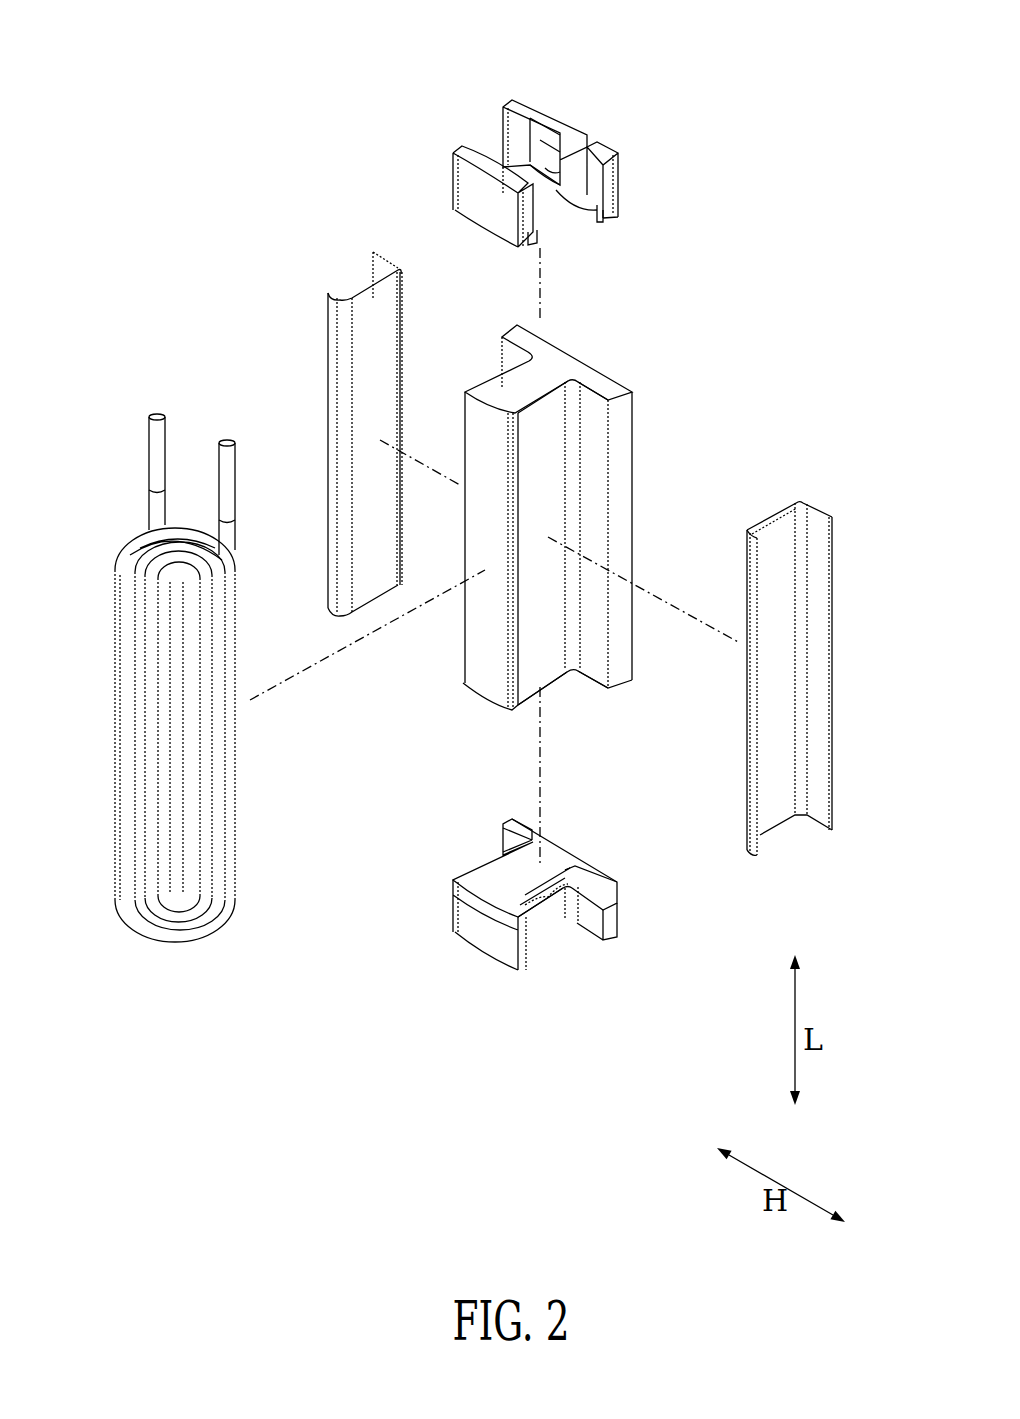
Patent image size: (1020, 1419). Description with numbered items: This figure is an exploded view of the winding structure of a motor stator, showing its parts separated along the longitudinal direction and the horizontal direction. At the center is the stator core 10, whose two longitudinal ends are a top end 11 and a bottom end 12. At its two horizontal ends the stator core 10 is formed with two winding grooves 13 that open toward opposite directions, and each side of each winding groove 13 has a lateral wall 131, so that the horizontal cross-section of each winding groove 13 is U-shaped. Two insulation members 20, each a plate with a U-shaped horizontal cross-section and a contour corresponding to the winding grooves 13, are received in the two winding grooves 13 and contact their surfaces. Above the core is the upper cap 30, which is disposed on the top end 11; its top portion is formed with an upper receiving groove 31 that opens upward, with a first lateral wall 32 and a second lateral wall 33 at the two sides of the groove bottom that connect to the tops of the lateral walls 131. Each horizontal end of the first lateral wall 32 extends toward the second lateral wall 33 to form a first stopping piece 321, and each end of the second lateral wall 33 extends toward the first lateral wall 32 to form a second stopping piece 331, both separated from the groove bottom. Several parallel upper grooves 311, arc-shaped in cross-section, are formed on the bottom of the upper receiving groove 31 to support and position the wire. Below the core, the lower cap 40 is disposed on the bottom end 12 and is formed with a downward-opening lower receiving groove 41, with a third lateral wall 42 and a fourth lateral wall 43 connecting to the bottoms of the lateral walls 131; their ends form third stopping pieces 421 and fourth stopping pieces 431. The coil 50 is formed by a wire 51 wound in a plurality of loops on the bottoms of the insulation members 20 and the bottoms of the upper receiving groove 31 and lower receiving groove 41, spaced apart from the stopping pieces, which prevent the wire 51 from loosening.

The stator core 10 is at (601, 550).
The top end 11 is at (568, 361).
The bottom end 12 is at (562, 692).
The winding groove 13 is at (552, 423).
The lateral wall 131 is at (597, 613).
The insulation member 20 is at (823, 540).
The upper cap 30 is at (546, 185).
The upper receiving groove 31 is at (558, 143).
The upper groove 311 is at (523, 165).
The first lateral wall 32 is at (598, 180).
The first stopping piece 321 is at (588, 218).
The second lateral wall 33 is at (463, 180).
The second stopping piece 331 is at (540, 238).
The lower cap 40 is at (528, 908).
The lower receiving groove 41 is at (566, 946).
The third lateral wall 42 is at (613, 922).
The third stopping piece 421 is at (507, 843).
The fourth lateral wall 43 is at (505, 950).
The fourth stopping piece 431 is at (466, 875).
The coil 50 is at (138, 738).
The wire 51 is at (125, 592).